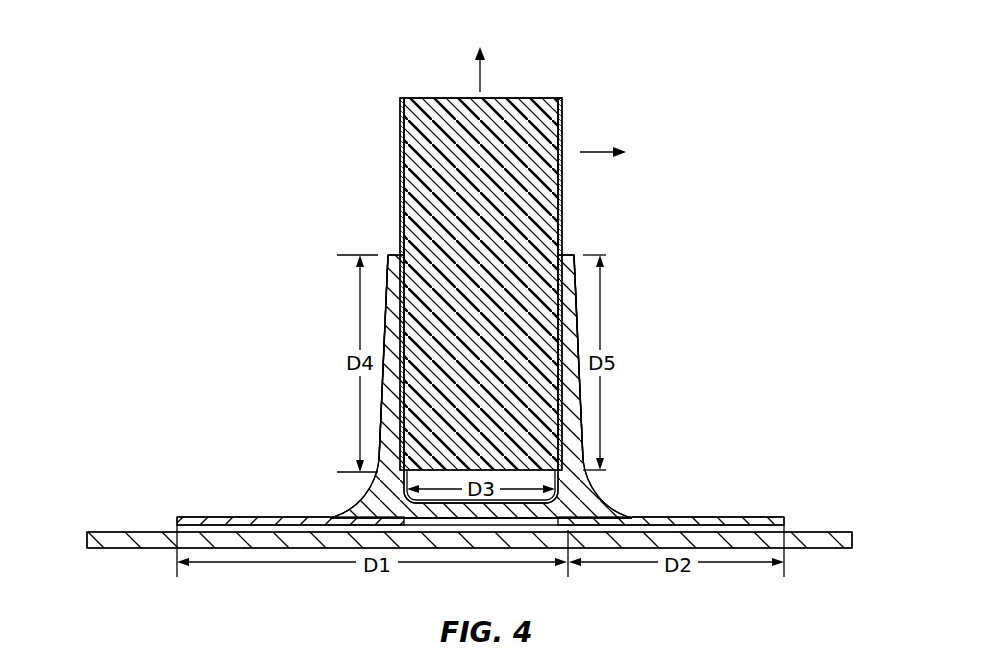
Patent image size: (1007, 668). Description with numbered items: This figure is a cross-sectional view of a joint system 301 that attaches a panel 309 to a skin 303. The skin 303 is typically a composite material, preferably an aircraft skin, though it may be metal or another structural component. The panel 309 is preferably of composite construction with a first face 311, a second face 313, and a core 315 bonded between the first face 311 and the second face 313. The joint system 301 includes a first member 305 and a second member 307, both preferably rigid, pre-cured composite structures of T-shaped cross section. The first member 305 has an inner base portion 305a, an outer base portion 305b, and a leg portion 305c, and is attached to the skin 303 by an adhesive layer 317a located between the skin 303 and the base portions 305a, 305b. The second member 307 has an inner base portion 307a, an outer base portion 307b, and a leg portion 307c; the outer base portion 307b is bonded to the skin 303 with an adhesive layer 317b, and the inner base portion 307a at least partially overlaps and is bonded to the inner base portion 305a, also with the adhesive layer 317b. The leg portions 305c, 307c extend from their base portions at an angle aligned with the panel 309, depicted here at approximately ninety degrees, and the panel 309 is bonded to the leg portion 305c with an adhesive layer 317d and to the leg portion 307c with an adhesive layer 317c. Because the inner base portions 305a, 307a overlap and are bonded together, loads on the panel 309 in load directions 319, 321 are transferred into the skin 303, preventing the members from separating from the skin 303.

The joint system 301 is at (268, 177).
The skin 303 is at (113, 548).
The first member 305 is at (362, 504).
The inner base portion 305a is at (515, 526).
The outer base portion 305b is at (297, 517).
The leg portion 305c is at (381, 415).
The second member 307 is at (592, 501).
The inner base portion 307a is at (460, 519).
The outer base portion 307b is at (697, 517).
The leg portion 307c is at (581, 413).
The panel 309 is at (561, 99).
The first face 311 is at (401, 228).
The second face 313 is at (562, 215).
The core 315 is at (403, 163).
The adhesive layer 317a is at (177, 532).
The adhesive layer 317b is at (786, 531).
The adhesive layer 317c is at (576, 330).
The adhesive layer 317d is at (386, 328).
The load direction 319 is at (478, 75).
The load direction 321 is at (583, 151).